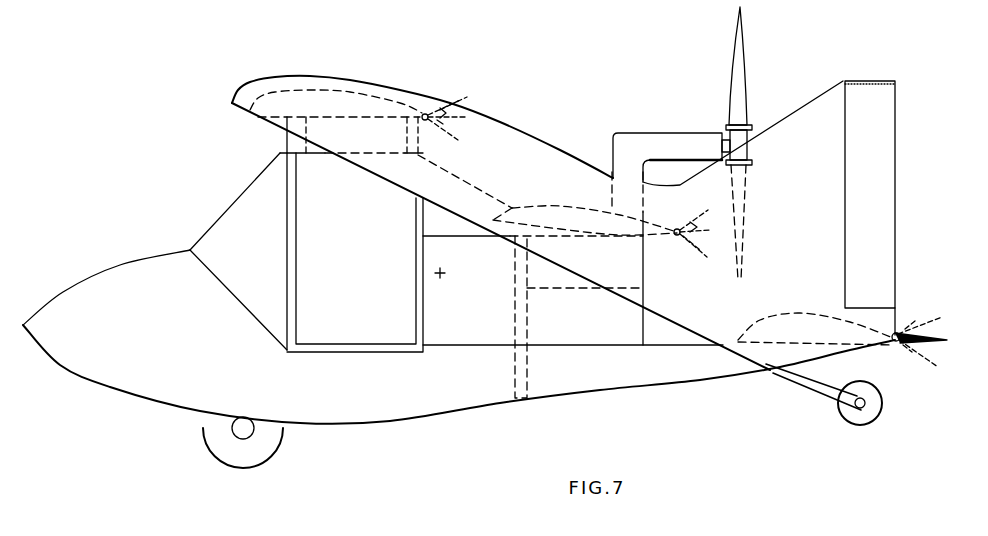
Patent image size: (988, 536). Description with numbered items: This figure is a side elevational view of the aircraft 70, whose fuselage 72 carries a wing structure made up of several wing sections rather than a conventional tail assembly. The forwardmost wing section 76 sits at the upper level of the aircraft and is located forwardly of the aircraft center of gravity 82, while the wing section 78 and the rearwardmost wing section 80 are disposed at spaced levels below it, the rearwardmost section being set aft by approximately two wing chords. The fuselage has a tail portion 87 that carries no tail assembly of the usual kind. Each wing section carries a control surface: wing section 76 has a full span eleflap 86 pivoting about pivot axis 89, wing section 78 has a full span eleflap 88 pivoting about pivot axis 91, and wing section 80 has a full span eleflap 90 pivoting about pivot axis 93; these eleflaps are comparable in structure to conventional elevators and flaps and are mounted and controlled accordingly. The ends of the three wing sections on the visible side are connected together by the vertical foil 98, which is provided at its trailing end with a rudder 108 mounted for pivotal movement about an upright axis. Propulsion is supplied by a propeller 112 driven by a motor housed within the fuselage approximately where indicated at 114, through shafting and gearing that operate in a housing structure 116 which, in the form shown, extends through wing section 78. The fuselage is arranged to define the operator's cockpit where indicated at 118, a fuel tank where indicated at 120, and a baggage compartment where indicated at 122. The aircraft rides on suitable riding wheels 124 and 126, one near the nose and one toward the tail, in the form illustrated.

The aircraft 70 is at (130, 452).
The fuselage 72 is at (115, 382).
The forwardmost wing section 76 is at (347, 93).
The wing section 78 is at (572, 207).
The rearwardmost wing section 80 is at (783, 318).
The aircraft center of gravity 82 is at (441, 276).
The full span eleflap 86 is at (445, 110).
The tail portion 87 is at (867, 353).
The full span eleflap 88 is at (683, 245).
The pivot axis 89 is at (426, 112).
The full span eleflap 90 is at (905, 330).
The pivot axis 91 is at (672, 242).
The pivot axis 93 is at (892, 333).
The vertical foil 98 is at (547, 157).
The rudder 108 is at (878, 172).
The propeller 112 is at (750, 78).
The motor location 114 is at (670, 140).
The housing structure 116 is at (632, 143).
The operator's cockpit 118 is at (370, 353).
The fuel tank 120 is at (480, 266).
The baggage compartment 122 is at (475, 378).
The riding wheel 124 is at (248, 452).
The riding wheel 126 is at (848, 422).